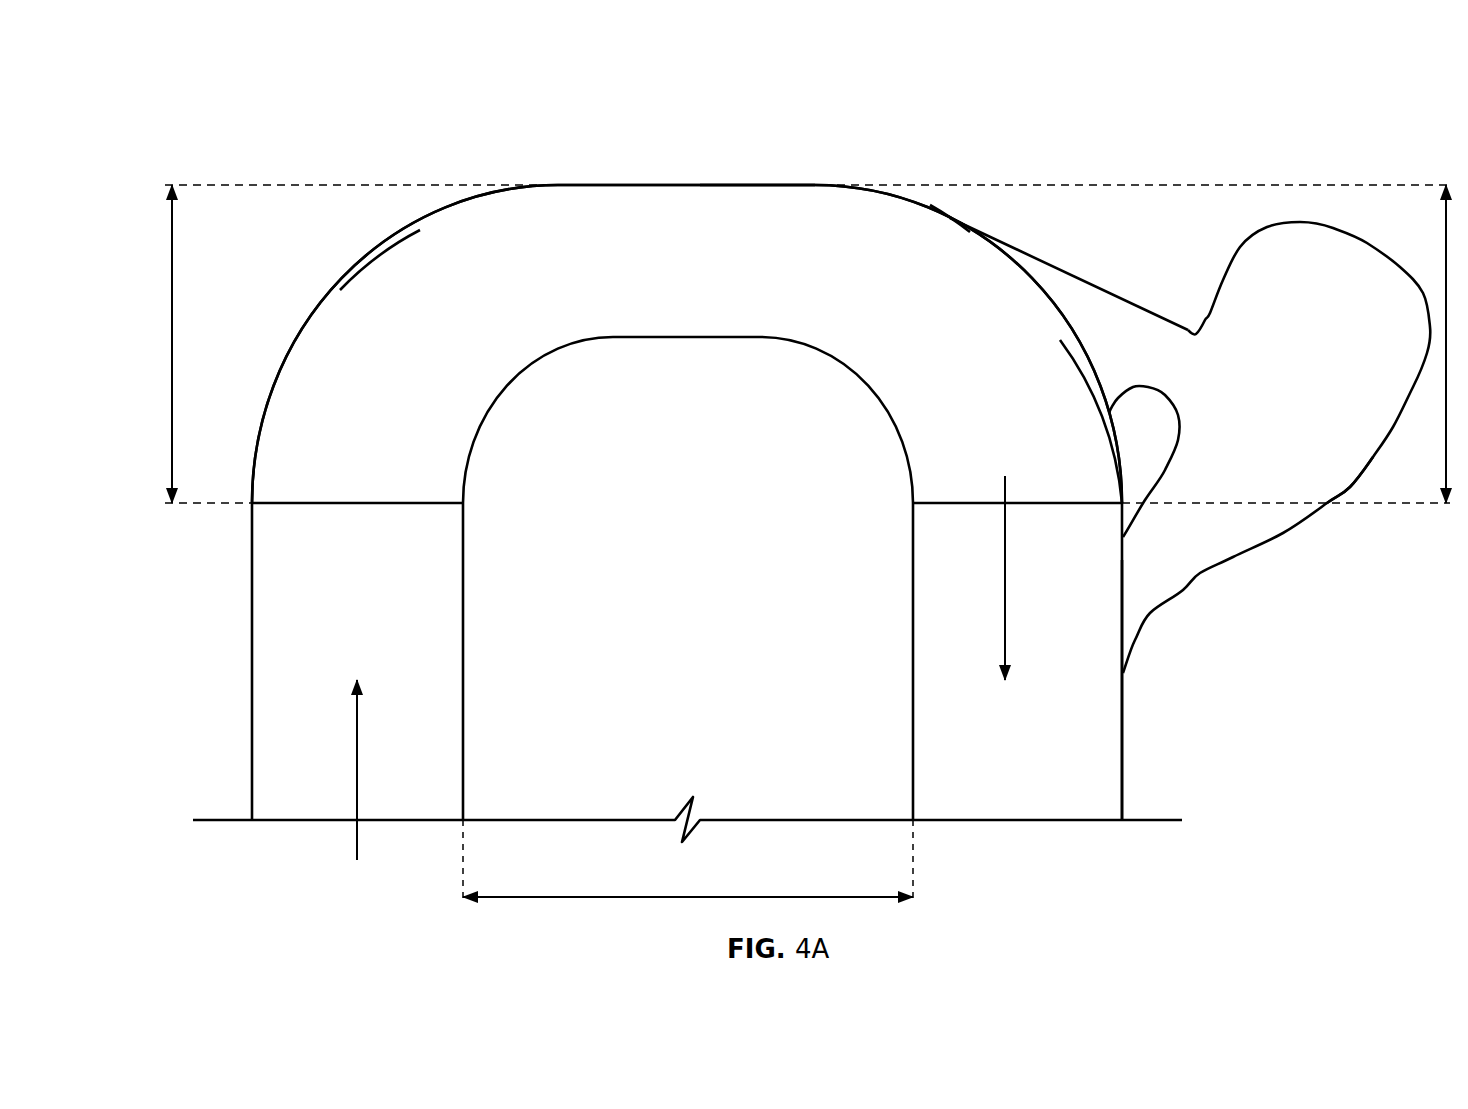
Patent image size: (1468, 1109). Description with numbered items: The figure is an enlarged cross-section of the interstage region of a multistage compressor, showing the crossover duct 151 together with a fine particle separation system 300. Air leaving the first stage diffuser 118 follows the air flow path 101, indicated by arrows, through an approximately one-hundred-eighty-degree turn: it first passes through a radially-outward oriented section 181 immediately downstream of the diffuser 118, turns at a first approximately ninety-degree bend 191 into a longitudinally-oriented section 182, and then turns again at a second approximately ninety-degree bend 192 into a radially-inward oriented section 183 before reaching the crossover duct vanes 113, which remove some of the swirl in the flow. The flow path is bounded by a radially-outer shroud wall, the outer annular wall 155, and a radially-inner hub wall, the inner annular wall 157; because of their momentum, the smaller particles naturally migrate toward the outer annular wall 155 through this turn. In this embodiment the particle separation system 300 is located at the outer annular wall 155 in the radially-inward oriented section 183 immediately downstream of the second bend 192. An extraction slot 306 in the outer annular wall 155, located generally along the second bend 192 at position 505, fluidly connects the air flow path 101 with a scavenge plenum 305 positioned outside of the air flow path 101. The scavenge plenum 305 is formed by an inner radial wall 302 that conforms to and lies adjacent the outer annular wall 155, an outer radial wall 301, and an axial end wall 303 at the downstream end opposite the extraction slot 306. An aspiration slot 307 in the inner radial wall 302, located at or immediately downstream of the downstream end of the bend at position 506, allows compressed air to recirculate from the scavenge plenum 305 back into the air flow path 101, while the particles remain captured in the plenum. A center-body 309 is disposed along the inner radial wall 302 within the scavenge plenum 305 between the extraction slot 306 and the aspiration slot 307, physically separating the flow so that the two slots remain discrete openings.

The fine particle separation system 300 is at (280, 110).
The crossover duct 151 is at (793, 118).
The second approximately 90-degree bend 192 is at (790, 190).
The outer annular wall 155 is at (320, 305).
The first approximately 90-degree bend 191 is at (377, 255).
The inner annular wall 157 is at (505, 392).
The diffuser 118 is at (335, 615).
The crossover duct vanes 113 is at (996, 762).
The first radially-outward oriented section 181 is at (170, 345).
The third radially-inward oriented section 183 is at (1445, 248).
The second longitudinally-oriented section 182 is at (687, 897).
The position of extraction slot 505 is at (950, 217).
The outer radial wall 301 is at (1040, 259).
The extraction slot 306 is at (1026, 275).
The inner radial wall 302 is at (1113, 437).
The center-body 309 is at (1145, 390).
The scavenge plenum 305 is at (1285, 352).
The axial end wall 303 is at (1350, 487).
The air flow path 101 is at (357, 725).
The aspiration slot 307 is at (1130, 623).
The position of aspiration slot 506 is at (1127, 690).